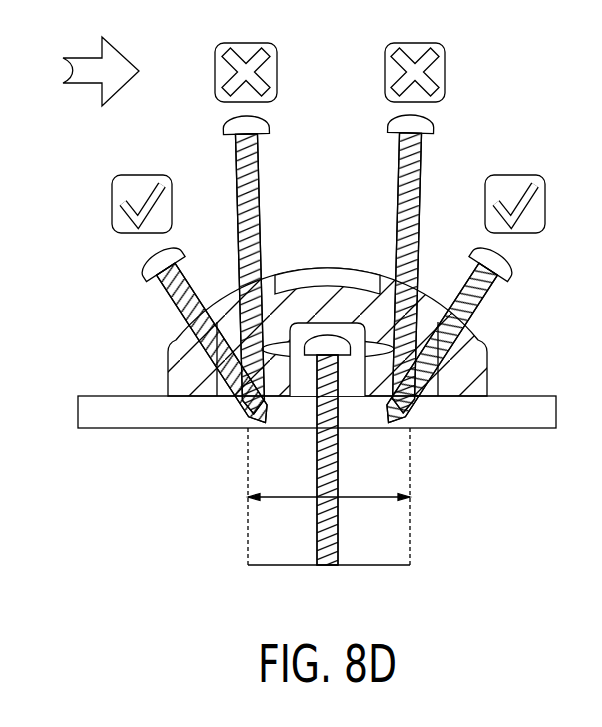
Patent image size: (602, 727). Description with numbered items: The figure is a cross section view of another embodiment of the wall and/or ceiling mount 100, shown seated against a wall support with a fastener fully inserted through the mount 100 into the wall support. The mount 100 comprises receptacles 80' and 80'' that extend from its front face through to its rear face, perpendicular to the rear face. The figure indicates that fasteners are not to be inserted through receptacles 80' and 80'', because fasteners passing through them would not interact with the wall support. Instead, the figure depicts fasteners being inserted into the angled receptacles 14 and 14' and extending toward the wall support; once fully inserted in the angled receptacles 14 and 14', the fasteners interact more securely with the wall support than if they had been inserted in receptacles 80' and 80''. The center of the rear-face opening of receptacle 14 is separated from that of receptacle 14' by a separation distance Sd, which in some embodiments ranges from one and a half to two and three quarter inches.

The mount 100 is at (513, 117).
The angled receptacle 14 is at (175, 338).
The angled receptacle 14' is at (451, 338).
The receptacle 80' is at (259, 264).
The receptacle 80'' is at (421, 263).
The separation distance Sd is at (372, 497).